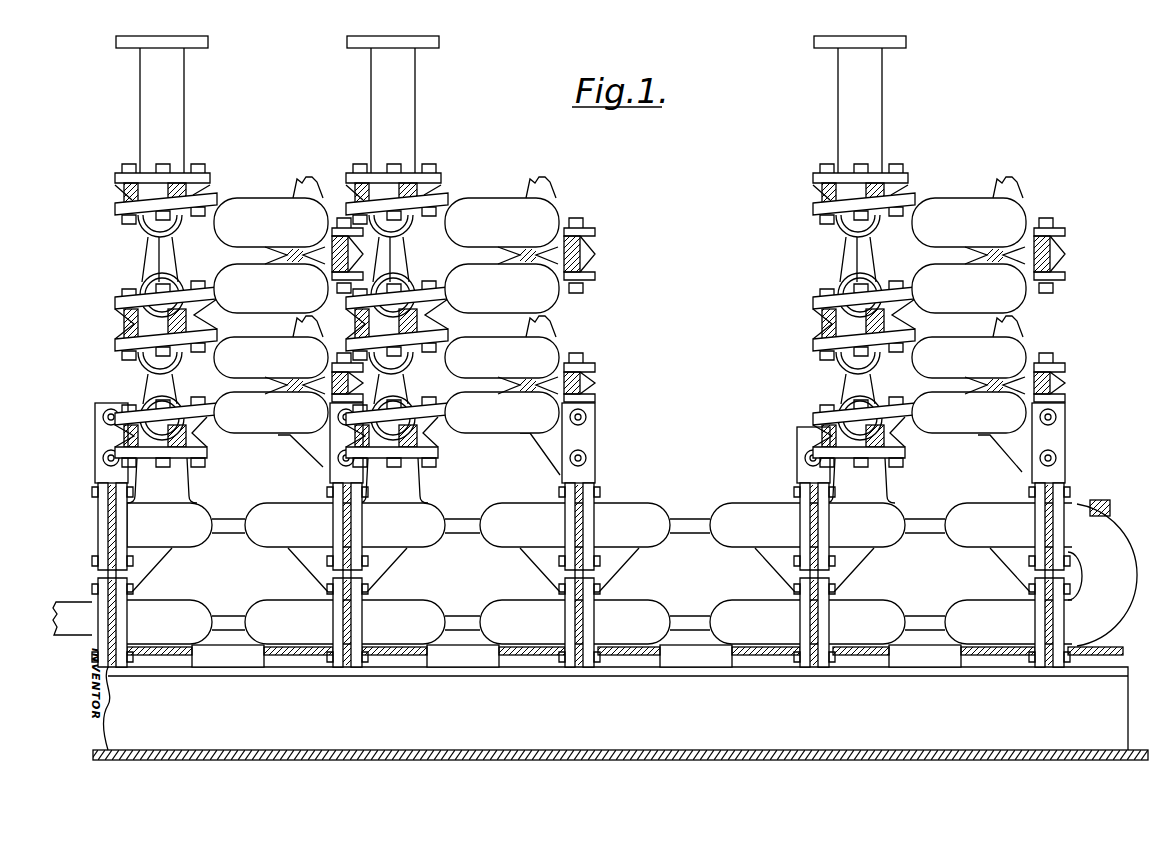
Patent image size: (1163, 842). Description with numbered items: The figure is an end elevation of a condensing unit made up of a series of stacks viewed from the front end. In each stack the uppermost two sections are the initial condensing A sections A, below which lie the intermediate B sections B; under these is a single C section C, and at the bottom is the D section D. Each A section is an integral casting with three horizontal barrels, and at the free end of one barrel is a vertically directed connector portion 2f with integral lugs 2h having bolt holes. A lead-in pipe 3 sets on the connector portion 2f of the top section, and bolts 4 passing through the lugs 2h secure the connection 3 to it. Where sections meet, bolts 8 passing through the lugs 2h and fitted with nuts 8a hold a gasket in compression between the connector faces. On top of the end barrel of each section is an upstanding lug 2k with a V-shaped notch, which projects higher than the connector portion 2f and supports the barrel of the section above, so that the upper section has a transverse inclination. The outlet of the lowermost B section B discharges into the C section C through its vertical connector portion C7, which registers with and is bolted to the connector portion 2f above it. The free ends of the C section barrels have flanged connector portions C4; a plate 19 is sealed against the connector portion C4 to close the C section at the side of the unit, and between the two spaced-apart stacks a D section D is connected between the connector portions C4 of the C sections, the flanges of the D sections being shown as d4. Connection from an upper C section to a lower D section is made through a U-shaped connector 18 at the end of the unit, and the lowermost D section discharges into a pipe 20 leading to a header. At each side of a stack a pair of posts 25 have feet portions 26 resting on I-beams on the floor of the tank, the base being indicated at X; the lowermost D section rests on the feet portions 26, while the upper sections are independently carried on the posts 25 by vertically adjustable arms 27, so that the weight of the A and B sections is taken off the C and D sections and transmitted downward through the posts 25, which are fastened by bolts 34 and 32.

The lead-in pipe 3 is at (180, 97).
The bolts 4 is at (133, 165).
The connector portion 2f is at (127, 193).
The lugs 2h is at (115, 207).
The nuts 8a is at (157, 287).
The bolts 8 is at (195, 283).
The upstanding lug 2k is at (308, 320).
The bolt 34 is at (120, 393).
The posts 25 is at (103, 440).
The bolt 32 is at (103, 462).
The vertically adjustable arms 27 is at (290, 435).
The vertical connector portion C7 is at (180, 470).
The plate 19 is at (100, 514).
The flanged connector portion C4 is at (118, 525).
The pipe 20 is at (77, 610).
The flange coupling of pipe D d4 is at (587, 527).
The feet portions 26 is at (175, 658).
The base X is at (620, 713).
The U-shaped connector 18 is at (1102, 573).
The A section A is at (620, 255).
The B section B is at (620, 385).
The C section C is at (642, 525).
The D section D is at (599, 577).